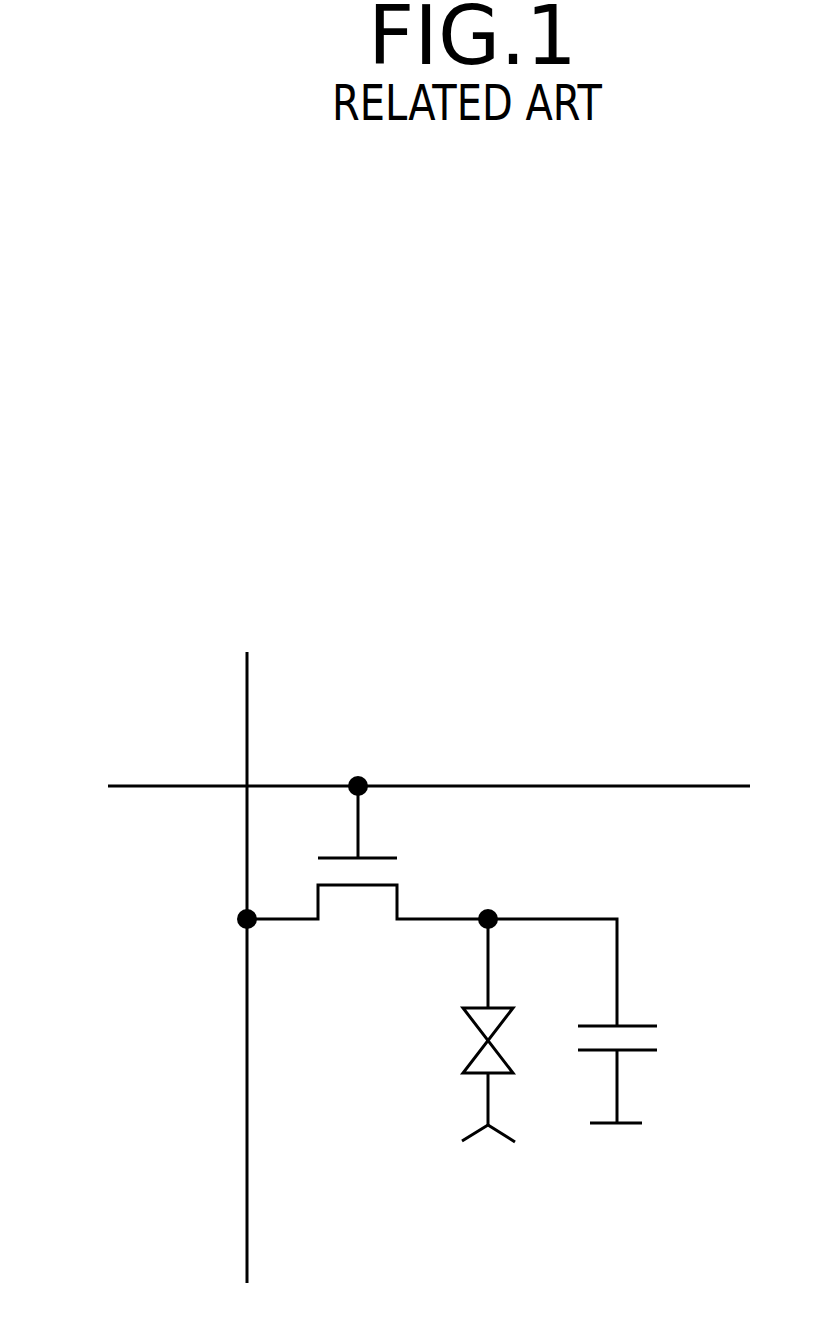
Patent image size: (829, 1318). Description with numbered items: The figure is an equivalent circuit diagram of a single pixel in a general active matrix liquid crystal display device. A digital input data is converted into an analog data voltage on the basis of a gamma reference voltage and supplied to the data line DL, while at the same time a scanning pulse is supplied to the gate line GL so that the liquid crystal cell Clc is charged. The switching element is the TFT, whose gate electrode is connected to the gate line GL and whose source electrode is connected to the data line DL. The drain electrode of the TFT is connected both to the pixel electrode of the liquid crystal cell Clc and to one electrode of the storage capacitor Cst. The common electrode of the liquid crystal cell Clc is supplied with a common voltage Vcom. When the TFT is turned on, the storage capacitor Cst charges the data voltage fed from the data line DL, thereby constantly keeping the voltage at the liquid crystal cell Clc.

The data line DL is at (238, 937).
The gate line GL is at (392, 791).
The thin film transistor TFT is at (367, 852).
The liquid crystal cell Clc is at (455, 1022).
The common voltage Vcom is at (476, 1158).
The storage capacitor Cst is at (613, 1021).